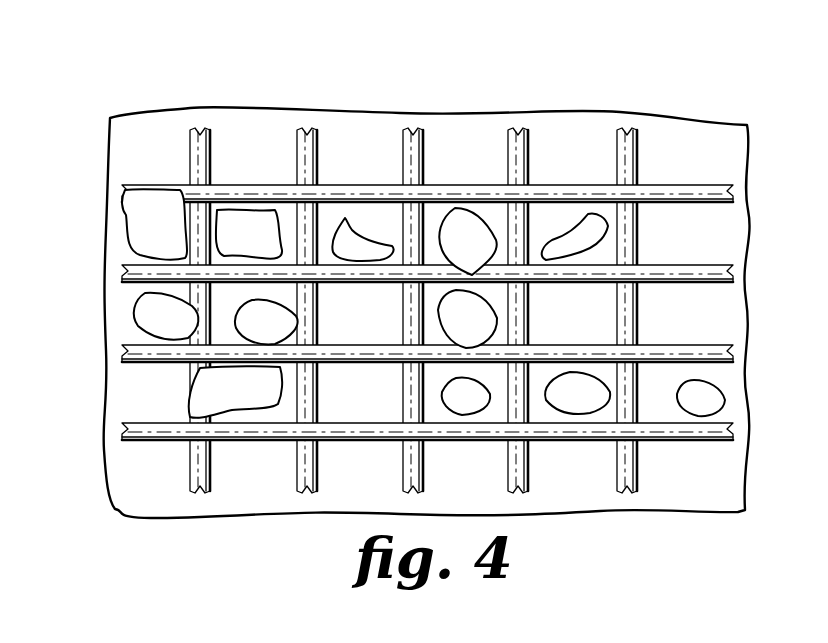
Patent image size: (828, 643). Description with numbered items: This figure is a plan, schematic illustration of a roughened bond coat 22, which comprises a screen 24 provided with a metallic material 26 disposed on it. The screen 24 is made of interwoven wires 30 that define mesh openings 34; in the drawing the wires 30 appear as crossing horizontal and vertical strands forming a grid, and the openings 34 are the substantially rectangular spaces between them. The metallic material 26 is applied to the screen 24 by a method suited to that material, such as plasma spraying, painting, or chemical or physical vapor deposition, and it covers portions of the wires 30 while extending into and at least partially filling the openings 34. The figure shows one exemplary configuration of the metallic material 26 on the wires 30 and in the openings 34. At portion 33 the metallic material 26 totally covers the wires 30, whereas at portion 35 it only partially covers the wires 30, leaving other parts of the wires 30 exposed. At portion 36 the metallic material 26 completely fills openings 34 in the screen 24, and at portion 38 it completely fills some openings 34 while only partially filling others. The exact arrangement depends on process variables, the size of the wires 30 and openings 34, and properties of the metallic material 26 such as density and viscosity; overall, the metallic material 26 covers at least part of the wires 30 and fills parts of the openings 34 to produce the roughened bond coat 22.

The roughened bond coat 22 is at (78, 242).
The screen 24 is at (141, 103).
The metallic material 26 is at (502, 197).
The wires 30 is at (584, 432).
The portion 33 is at (372, 207).
The mesh openings 34 is at (402, 243).
The portion 35 is at (272, 406).
The portion 36 is at (270, 246).
The portion 38 is at (482, 253).